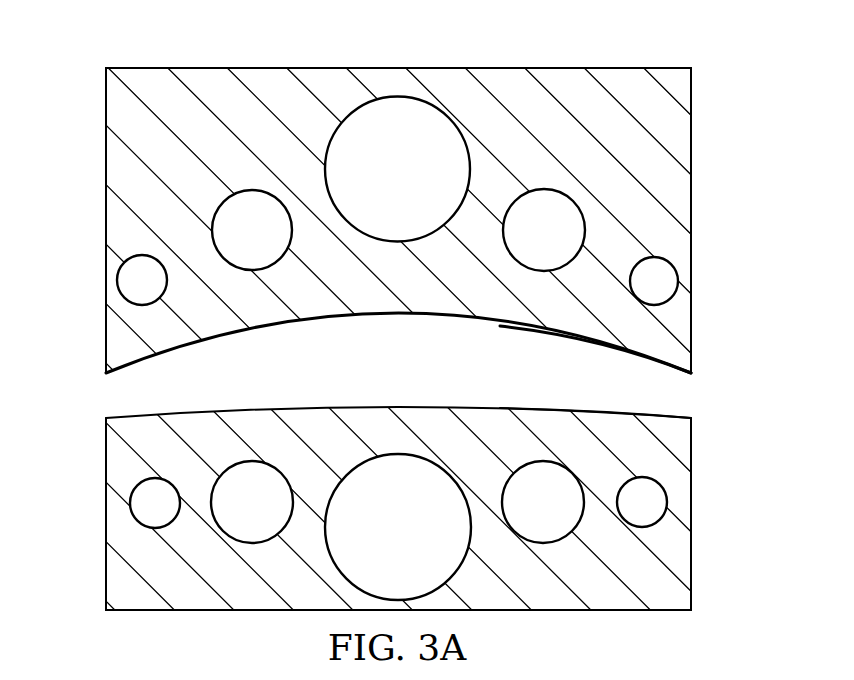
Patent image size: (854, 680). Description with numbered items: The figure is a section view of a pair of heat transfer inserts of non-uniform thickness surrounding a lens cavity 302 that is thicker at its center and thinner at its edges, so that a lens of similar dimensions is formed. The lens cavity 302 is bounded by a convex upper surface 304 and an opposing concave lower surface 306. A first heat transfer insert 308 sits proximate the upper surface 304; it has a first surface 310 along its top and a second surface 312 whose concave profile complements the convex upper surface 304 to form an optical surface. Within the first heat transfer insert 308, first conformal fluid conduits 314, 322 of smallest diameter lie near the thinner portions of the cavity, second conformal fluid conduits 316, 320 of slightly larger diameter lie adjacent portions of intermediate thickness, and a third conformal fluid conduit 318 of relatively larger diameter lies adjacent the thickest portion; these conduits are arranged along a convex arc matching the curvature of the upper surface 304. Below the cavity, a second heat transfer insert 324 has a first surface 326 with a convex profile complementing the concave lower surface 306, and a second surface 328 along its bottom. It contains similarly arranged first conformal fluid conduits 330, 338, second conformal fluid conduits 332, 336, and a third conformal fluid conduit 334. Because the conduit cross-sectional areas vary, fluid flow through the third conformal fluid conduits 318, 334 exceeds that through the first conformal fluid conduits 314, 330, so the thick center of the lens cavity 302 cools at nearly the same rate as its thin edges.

The lens cavity 302 is at (113, 392).
The upper surface of the lens cavity 304 is at (137, 359).
The lower surface of the lens cavity 306 is at (133, 418).
The first heat transfer insert 308 is at (115, 103).
The first surface of the first heat transfer insert 310 is at (557, 68).
The second surface of the first heat transfer insert 312 is at (668, 366).
The first conformal fluid conduit 314 is at (138, 257).
The second conformal fluid conduit 316 is at (248, 192).
The third conformal fluid conduit 318 is at (417, 103).
The second conformal fluid conduit 320 is at (549, 192).
The first conformal fluid conduit 322 is at (657, 298).
The second heat transfer insert 324 is at (113, 577).
The first surface of the second heat transfer insert 326 is at (668, 417).
The second surface of the second heat transfer insert 328 is at (145, 613).
The first conformal fluid conduit 330 is at (143, 490).
The second conformal fluid conduit 332 is at (252, 540).
The third conformal fluid conduit 334 is at (352, 585).
The second conformal fluid conduit 336 is at (545, 462).
The first conformal fluid conduit 338 is at (646, 527).